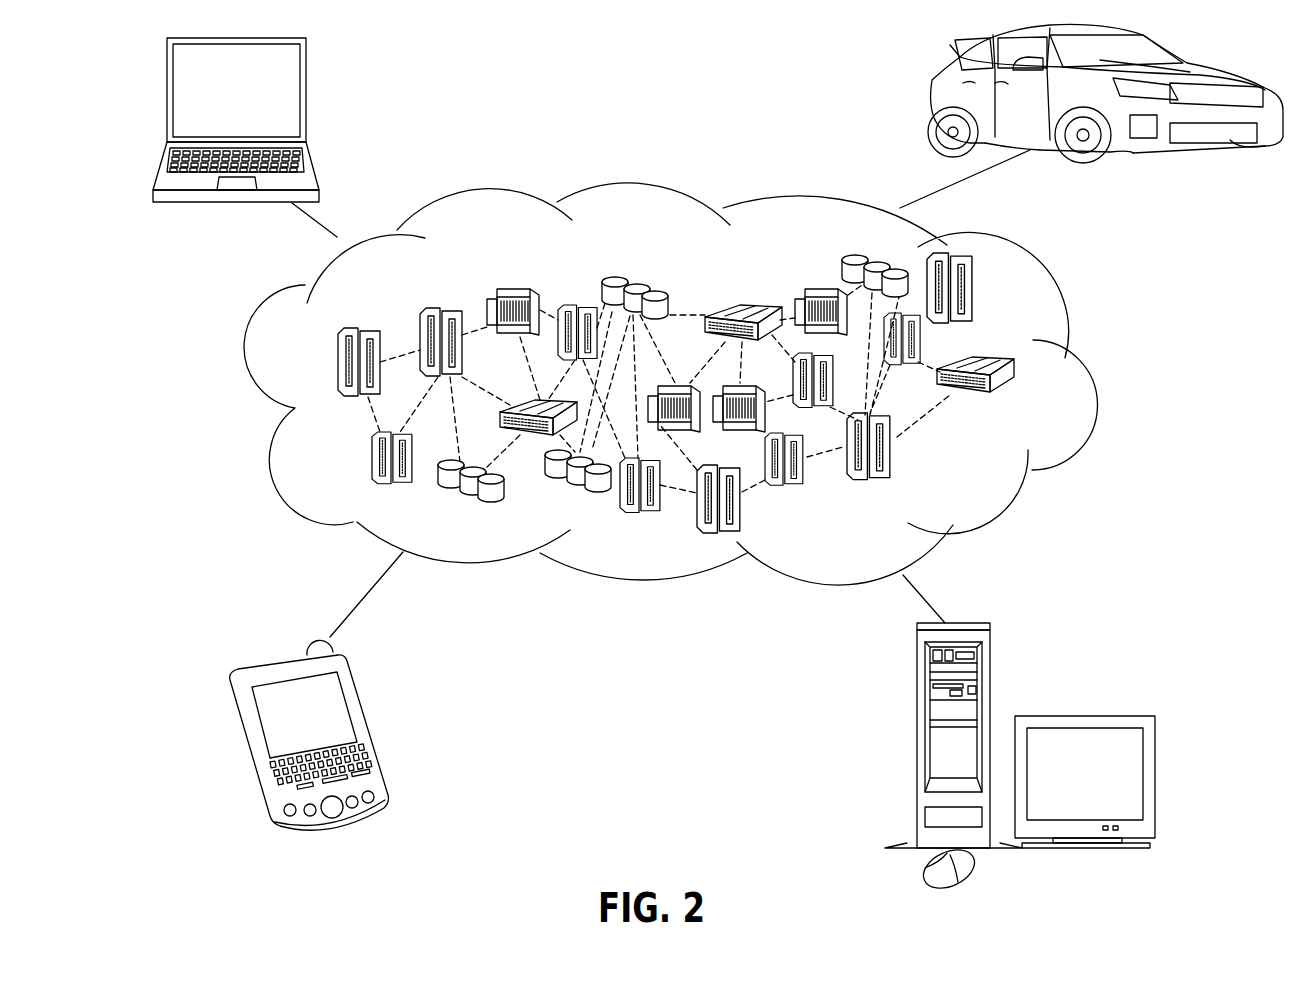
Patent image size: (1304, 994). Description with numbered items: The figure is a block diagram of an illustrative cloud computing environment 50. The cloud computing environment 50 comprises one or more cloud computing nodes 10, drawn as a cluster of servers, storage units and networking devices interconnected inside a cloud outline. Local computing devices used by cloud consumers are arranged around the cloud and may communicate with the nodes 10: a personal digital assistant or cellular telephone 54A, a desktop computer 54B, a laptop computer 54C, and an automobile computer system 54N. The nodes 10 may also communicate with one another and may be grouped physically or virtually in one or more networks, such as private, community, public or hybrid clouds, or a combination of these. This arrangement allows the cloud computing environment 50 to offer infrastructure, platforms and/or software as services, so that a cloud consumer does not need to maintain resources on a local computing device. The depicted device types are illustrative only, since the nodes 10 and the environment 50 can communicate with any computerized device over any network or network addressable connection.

The cloud computing node 10 is at (988, 473).
The cloud computing environment 50 is at (1082, 375).
The personal digital assistant (PDA) or cellular telephone 54A is at (358, 698).
The desktop computer 54B is at (917, 682).
The laptop computer 54C is at (307, 73).
The automobile computer system 54N is at (930, 96).